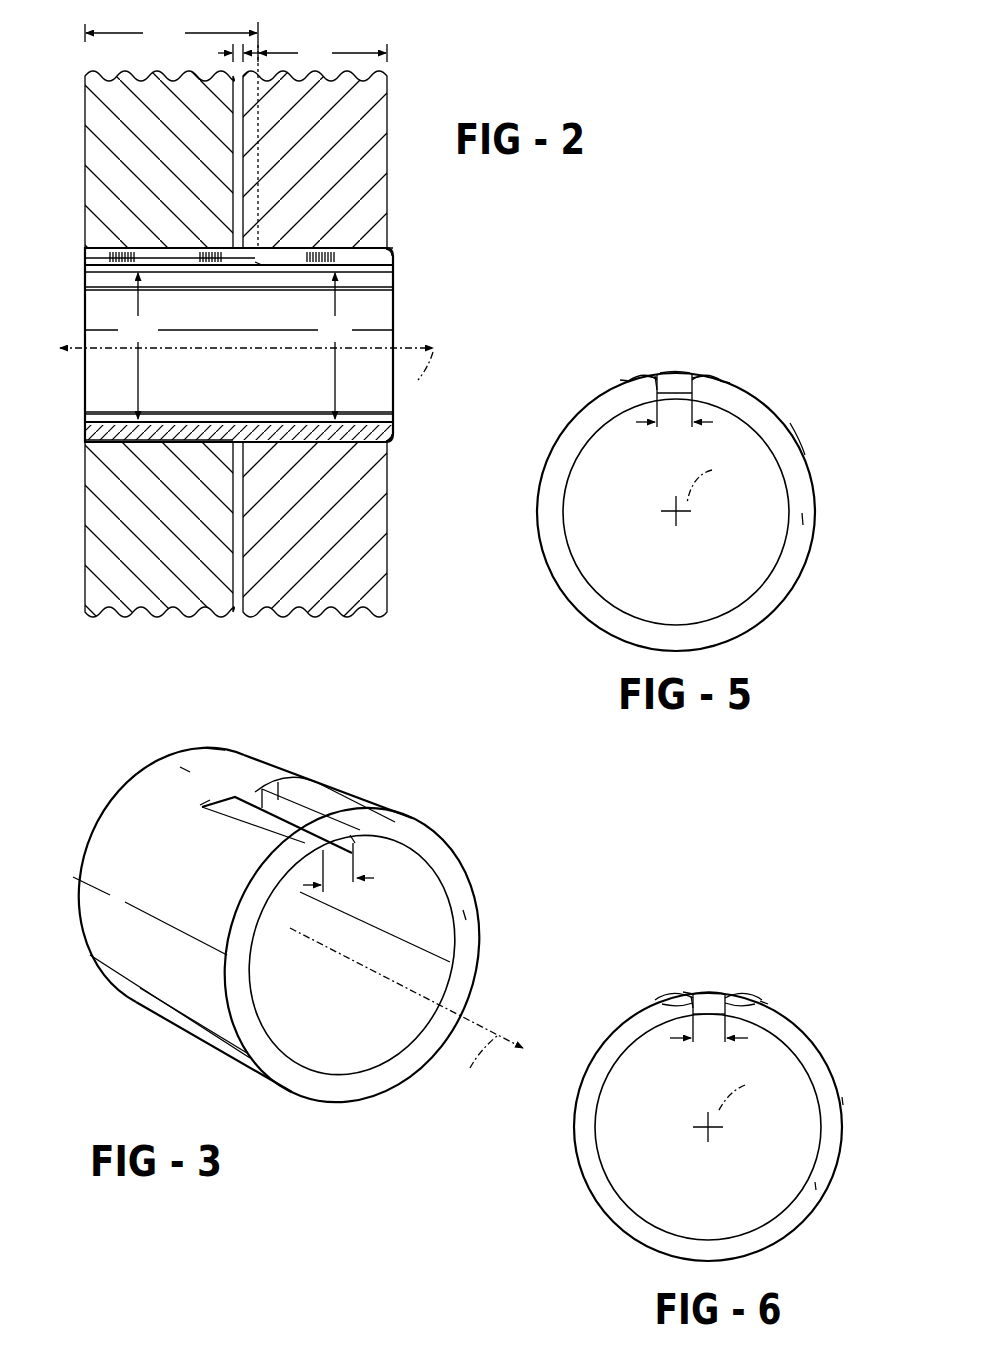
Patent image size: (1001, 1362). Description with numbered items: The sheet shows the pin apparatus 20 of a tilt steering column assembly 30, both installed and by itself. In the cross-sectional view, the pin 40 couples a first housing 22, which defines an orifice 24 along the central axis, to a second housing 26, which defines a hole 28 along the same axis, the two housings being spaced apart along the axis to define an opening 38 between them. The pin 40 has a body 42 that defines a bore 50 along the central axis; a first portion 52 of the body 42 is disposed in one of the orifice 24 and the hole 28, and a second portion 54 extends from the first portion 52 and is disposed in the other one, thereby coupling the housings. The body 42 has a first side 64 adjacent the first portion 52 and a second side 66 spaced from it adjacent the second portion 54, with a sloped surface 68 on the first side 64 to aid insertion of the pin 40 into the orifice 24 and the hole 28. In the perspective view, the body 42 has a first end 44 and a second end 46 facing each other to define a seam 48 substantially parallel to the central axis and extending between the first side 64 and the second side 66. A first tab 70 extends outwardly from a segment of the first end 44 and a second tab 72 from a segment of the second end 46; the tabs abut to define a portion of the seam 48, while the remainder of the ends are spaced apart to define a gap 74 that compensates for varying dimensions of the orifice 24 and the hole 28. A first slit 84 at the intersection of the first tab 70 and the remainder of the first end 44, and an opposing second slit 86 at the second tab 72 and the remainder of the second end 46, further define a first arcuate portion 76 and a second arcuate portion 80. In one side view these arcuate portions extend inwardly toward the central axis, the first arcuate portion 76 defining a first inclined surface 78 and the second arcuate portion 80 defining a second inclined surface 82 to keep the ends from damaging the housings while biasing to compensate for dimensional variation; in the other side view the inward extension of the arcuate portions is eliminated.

In FIG. 2, the pin apparatus 20 is at (411, 192).
In FIG. 5, the pin apparatus 20 is at (796, 286).
In FIG. 6, the pin apparatus 20 is at (775, 925).
In FIG. 3, the pin apparatus 20 is at (341, 1112).
In FIG. 2, the first housing 22 is at (367, 545).
In FIG. 2, the orifice 24 is at (353, 452).
In FIG. 2, the second housing 26 is at (106, 557).
In FIG. 2, the hole 28 is at (118, 449).
In FIG. 2, the tilt steering column assembly 30 is at (64, 57).
In FIG. 2, the opening 38 is at (217, 53).
In FIG. 2, the pin 40 is at (272, 447).
In FIG. 5, the pin 40 is at (553, 585).
In FIG. 6, the pin 40 is at (596, 1201).
In FIG. 3, the pin 40 is at (432, 841).
In FIG. 2, the body 42 is at (197, 435).
In FIG. 5, the body 42 is at (791, 423).
In FIG. 6, the body 42 is at (842, 1097).
In FIG. 3, the body 42 is at (148, 980).
In FIG. 5, the first end 44 is at (687, 380).
In FIG. 6, the first end 44 is at (719, 995).
In FIG. 3, the first end 44 is at (340, 816).
In FIG. 2, the second end 46 is at (96, 260).
In FIG. 5, the second end 46 is at (662, 374).
In FIG. 6, the second end 46 is at (695, 992).
In FIG. 3, the second end 46 is at (258, 790).
In FIG. 5, the seam 48 is at (674, 373).
In FIG. 6, the seam 48 is at (708, 993).
In FIG. 3, the seam 48 is at (215, 750).
In FIG. 2, the bore 50 is at (385, 282).
In FIG. 5, the bore 50 is at (748, 590).
In FIG. 6, the bore 50 is at (757, 1225).
In FIG. 3, the bore 50 is at (440, 977).
In FIG. 2, the first portion 52 is at (315, 243).
In FIG. 3, the first portion 52 is at (123, 807).
In FIG. 2, the second portion 54 is at (170, 244).
In FIG. 3, the second portion 54 is at (211, 1003).
In FIG. 2, the first side 64 is at (395, 414).
In FIG. 3, the first side 64 is at (73, 878).
In FIG. 2, the second side 66 is at (85, 400).
In FIG. 5, the second side 66 is at (802, 513).
In FIG. 6, the second side 66 is at (815, 1182).
In FIG. 3, the second side 66 is at (463, 910).
In FIG. 2, the sloped surface 68 is at (394, 252).
In FIG. 3, the first tab 70 is at (233, 757).
In FIG. 2, the second tab 72 is at (352, 250).
In FIG. 3, the second tab 72 is at (183, 767).
In FIG. 5, the gap 74 is at (641, 423).
In FIG. 6, the gap 74 is at (675, 1038).
In FIG. 3, the gap 74 is at (362, 878).
In FIG. 5, the first arcuate portion 76 is at (716, 378).
In FIG. 6, the first arcuate portion 76 is at (765, 1003).
In FIG. 3, the first arcuate portion 76 is at (315, 810).
In FIG. 5, the first inclined surface 78 is at (702, 377).
In FIG. 6, the first inclined surface 78 is at (730, 998).
In FIG. 3, the first inclined surface 78 is at (355, 830).
In FIG. 2, the second arcuate portion 80 is at (118, 246).
In FIG. 5, the second arcuate portion 80 is at (632, 377).
In FIG. 6, the second arcuate portion 80 is at (655, 1005).
In FIG. 3, the second arcuate portion 80 is at (240, 820).
In FIG. 5, the second inclined surface 82 is at (650, 376).
In FIG. 6, the second inclined surface 82 is at (683, 990).
In FIG. 3, the second inclined surface 82 is at (298, 860).
In FIG. 5, the first slit 84 is at (727, 383).
In FIG. 6, the first slit 84 is at (750, 998).
In FIG. 3, the first slit 84 is at (287, 790).
In FIG. 5, the second slit 86 is at (622, 378).
In FIG. 6, the second slit 86 is at (655, 995).
In FIG. 3, the second slit 86 is at (203, 803).